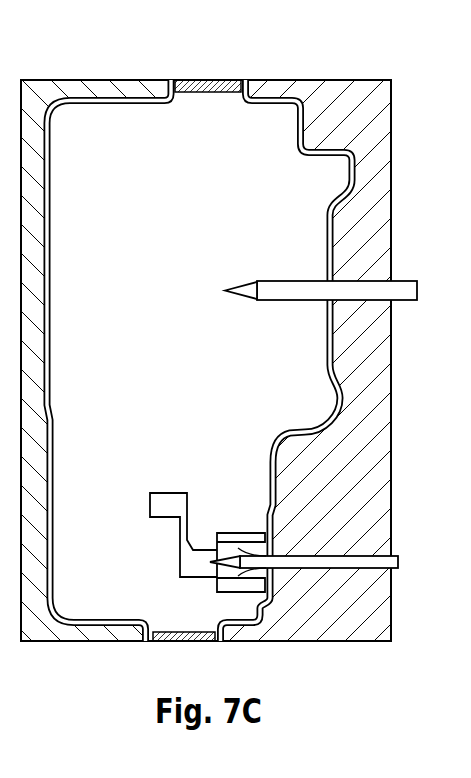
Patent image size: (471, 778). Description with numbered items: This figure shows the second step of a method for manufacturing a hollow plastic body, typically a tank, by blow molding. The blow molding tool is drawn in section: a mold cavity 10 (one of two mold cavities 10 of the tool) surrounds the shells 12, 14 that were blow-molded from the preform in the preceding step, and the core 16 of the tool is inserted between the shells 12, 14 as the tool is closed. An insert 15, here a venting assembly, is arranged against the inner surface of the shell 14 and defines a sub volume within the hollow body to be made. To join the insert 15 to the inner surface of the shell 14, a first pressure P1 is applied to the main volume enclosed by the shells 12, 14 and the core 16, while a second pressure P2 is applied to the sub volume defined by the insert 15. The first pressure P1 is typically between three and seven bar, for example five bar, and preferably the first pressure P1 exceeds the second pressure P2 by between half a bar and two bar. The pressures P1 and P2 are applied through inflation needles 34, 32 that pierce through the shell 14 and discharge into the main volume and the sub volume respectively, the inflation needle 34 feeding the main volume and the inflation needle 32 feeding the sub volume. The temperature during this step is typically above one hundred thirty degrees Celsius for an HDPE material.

The mold cavity 10 is at (35, 101).
The shell 12 is at (51, 240).
The shell 14 is at (326, 334).
The insert 15 is at (224, 490).
The core 16 is at (208, 85).
The inflation needle 32 is at (320, 598).
The inflation needle 34 is at (335, 245).
The first pressure P1 is at (335, 290).
The second pressure P2 is at (320, 562).